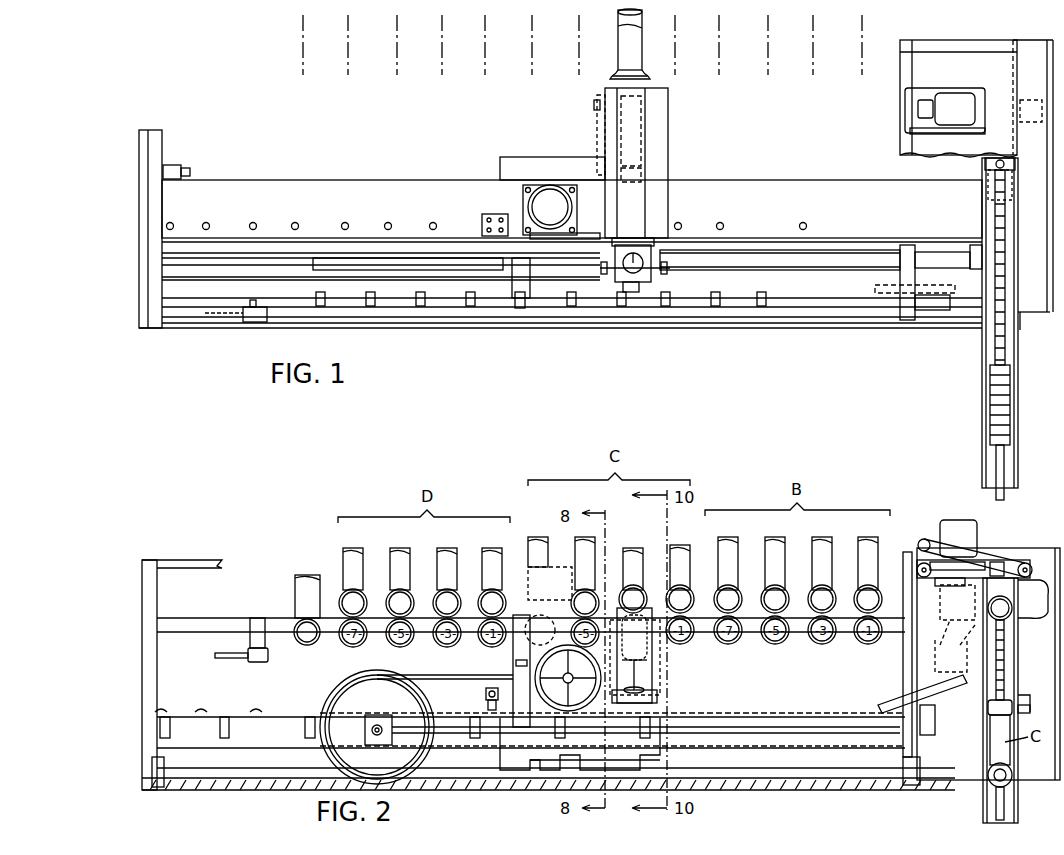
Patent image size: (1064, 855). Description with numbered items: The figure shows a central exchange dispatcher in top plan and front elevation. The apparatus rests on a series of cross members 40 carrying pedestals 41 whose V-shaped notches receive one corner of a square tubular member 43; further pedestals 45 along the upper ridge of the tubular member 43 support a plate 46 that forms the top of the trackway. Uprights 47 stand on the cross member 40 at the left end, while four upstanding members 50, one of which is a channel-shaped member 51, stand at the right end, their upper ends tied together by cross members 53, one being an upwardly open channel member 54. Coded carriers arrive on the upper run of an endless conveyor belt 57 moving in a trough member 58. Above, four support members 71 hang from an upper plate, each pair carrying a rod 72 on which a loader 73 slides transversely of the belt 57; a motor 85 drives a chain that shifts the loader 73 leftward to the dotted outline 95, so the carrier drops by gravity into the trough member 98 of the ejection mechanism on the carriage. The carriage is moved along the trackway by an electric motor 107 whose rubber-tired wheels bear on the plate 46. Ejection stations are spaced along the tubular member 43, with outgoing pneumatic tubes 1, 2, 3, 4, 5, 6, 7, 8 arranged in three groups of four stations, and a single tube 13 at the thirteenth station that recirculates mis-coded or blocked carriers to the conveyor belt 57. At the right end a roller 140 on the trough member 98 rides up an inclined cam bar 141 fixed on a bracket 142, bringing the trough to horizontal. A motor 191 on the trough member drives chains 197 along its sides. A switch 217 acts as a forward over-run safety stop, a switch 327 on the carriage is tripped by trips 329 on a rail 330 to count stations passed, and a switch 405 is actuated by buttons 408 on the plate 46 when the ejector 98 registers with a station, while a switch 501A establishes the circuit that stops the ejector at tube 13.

In FIG. 2, the outgoing tube 1 is at (489, 554).
In FIG. 2, the outgoing tube 2 is at (496, 584).
In FIG. 1, the outgoing tube 3 is at (648, 76).
In FIG. 2, the outgoing tube 3 is at (443, 554).
In FIG. 1, the outgoing tube 4 is at (618, 40).
In FIG. 2, the outgoing tube 4 is at (452, 584).
In FIG. 2, the outgoing tube 5 is at (395, 554).
In FIG. 2, the outgoing tube 6 is at (406, 584).
In FIG. 2, the outgoing tube 7 is at (347, 554).
In FIG. 2, the outgoing tube 8 is at (360, 584).
In FIG. 2, the outgoing tube 13 is at (300, 592).
In FIG. 1, the cross members 40 is at (160, 300).
In FIG. 2, the cross members 40 is at (155, 790).
In FIG. 2, the pedestals 41 is at (160, 766).
In FIG. 2, the tubular member 43 is at (556, 747).
In FIG. 2, the pedestals 45 is at (228, 724).
In FIG. 1, the plate 46 is at (301, 192).
In FIG. 2, the plate 46 is at (200, 717).
In FIG. 2, the uprights 47 is at (142, 610).
In FIG. 2, the upstanding members 50 is at (905, 640).
In FIG. 2, the upstanding member 51 is at (1036, 697).
In FIG. 1, the cross members 53 is at (963, 50).
In FIG. 1, the cross member 54 is at (1028, 50).
In FIG. 1, the conveyor belt 57 is at (1000, 250).
In FIG. 2, the conveyor belt 57 is at (1005, 662).
In FIG. 1, the trough member 58 is at (1018, 412).
In FIG. 2, the trough member 58 is at (1020, 800).
In FIG. 2, the support members 71 is at (1030, 564).
In FIG. 2, the rod 72 is at (975, 566).
In FIG. 2, the loader 73 is at (1022, 598).
In FIG. 1, the motor 85 is at (955, 92).
In FIG. 2, the motor 85 is at (950, 525).
In FIG. 2, the dotted outline 95 is at (976, 602).
In FIG. 1, the trough member 98 is at (676, 143).
In FIG. 2, the trough member 98 is at (655, 640).
In FIG. 1, the electric motor 107 is at (538, 188).
In FIG. 2, the electric motor 107 is at (540, 634).
In FIG. 2, the roller 140 is at (935, 672).
In FIG. 1, the cam bar 141 is at (878, 286).
In FIG. 2, the cam bar 141 is at (892, 706).
In FIG. 2, the bracket 142 is at (932, 715).
In FIG. 1, the motor 191 is at (616, 258).
In FIG. 1, the chain 197 is at (610, 128).
In FIG. 1, the switch 217 is at (180, 166).
In FIG. 1, the switch 327 is at (518, 302).
In FIG. 2, the switch 327 is at (513, 650).
In FIG. 1, the trips 329 is at (419, 294).
In FIG. 1, the rail 330 is at (692, 307).
In FIG. 2, the rail 330 is at (188, 566).
In FIG. 1, the switch 405 is at (487, 214).
In FIG. 2, the switch 405 is at (486, 694).
In FIG. 1, the actuating buttons 408 is at (345, 223).
In FIG. 2, the actuating buttons 408 is at (300, 716).
In FIG. 1, the switch 501A is at (266, 310).